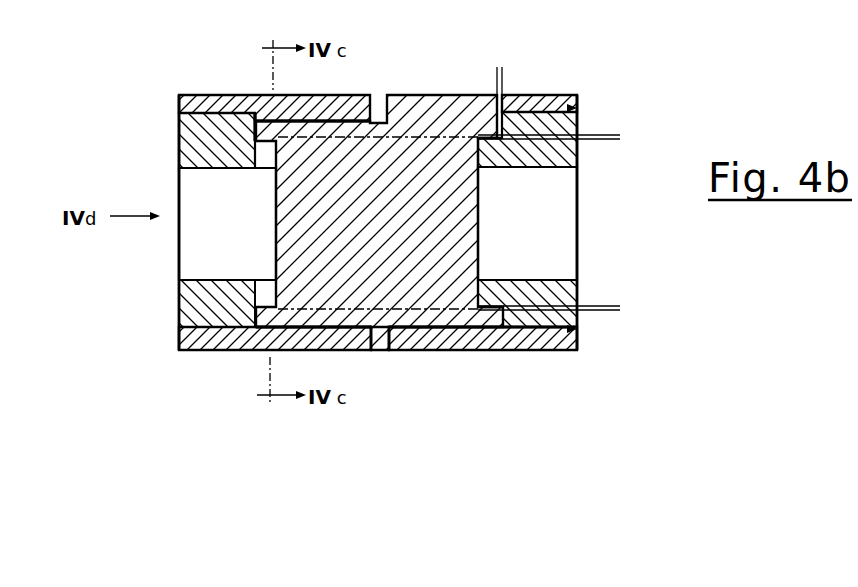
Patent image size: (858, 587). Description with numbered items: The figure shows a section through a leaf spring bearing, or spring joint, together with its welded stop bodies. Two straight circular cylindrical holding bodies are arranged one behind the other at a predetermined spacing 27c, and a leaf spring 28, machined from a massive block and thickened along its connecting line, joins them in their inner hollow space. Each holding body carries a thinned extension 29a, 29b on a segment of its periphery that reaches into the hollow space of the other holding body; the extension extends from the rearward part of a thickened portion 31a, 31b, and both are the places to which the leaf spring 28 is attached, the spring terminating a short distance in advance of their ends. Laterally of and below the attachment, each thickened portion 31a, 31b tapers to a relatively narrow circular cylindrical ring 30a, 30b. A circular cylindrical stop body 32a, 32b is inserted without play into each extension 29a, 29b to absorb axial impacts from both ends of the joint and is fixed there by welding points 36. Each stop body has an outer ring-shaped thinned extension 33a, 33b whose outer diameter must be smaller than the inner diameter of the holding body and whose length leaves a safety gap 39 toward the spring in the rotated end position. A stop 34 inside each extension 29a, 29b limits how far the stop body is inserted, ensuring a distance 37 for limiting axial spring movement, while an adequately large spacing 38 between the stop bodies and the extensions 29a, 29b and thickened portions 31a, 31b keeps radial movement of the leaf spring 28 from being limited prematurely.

The predetermined spacing 27c is at (380, 352).
The leaf spring 28 is at (412, 155).
The thinned extension 29a is at (340, 118).
The thinned extension 29b is at (483, 328).
The circular cylindrical ring 30a is at (434, 340).
The circular cylindrical ring 30b is at (220, 105).
The thickened portion 31a is at (452, 103).
The thickened portion 31b is at (272, 352).
The stop body 32a is at (578, 158).
The stop body 32b is at (195, 134).
The extension of stop body 33a is at (513, 280).
The extension of stop body 33b is at (258, 278).
The stop 34 is at (510, 98).
The welding points 36 is at (578, 108).
The distance 37 is at (470, 70).
The spacing 38 is at (605, 113).
The safety gap 39 is at (605, 277).